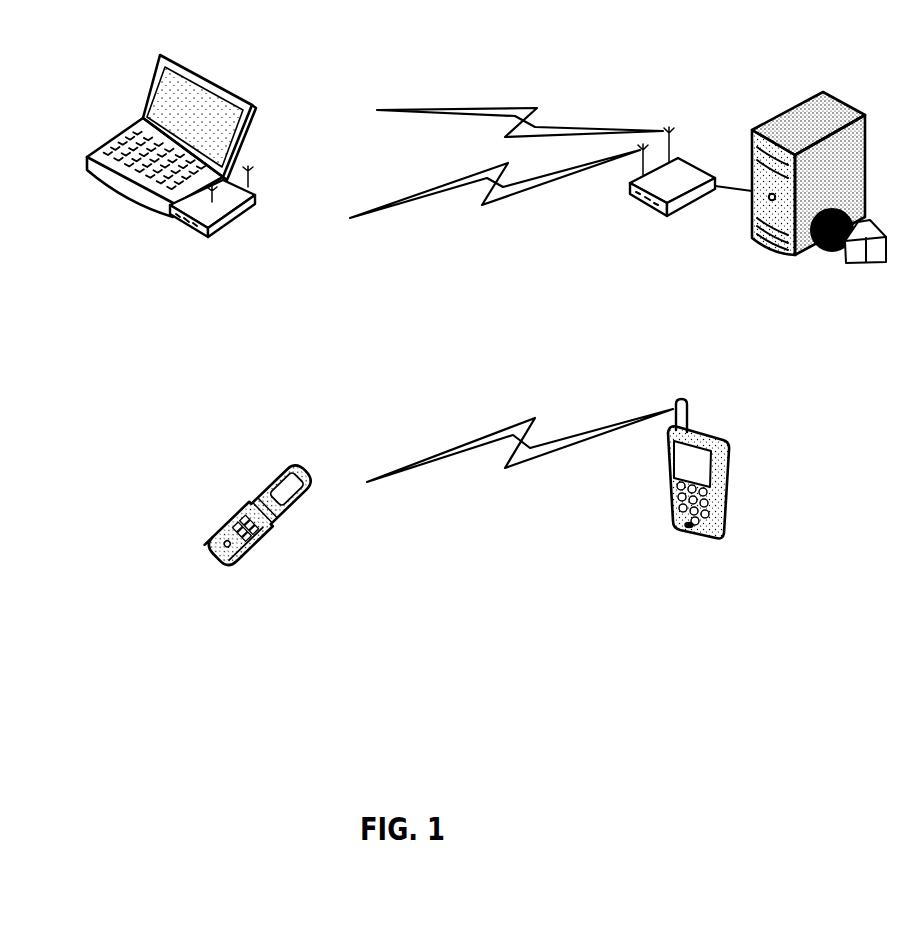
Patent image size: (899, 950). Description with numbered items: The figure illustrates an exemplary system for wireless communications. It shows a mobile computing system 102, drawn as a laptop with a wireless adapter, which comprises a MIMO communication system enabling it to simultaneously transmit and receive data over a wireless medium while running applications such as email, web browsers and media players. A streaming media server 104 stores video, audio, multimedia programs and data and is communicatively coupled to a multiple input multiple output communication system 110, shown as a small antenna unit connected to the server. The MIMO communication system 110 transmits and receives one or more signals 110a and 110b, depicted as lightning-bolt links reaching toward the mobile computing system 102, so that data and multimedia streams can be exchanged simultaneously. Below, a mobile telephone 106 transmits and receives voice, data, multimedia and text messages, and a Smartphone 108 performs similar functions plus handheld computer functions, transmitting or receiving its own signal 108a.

The mobile computing system 102 is at (153, 60).
The streaming media server 104 is at (790, 104).
The mobile telephone 106 is at (262, 472).
The Smartphone 108 is at (728, 533).
The signal 108a is at (508, 428).
The multiple input multiple output (MIMO) communication system 110 is at (682, 212).
The signal 110a is at (483, 107).
The signal 110b is at (440, 183).